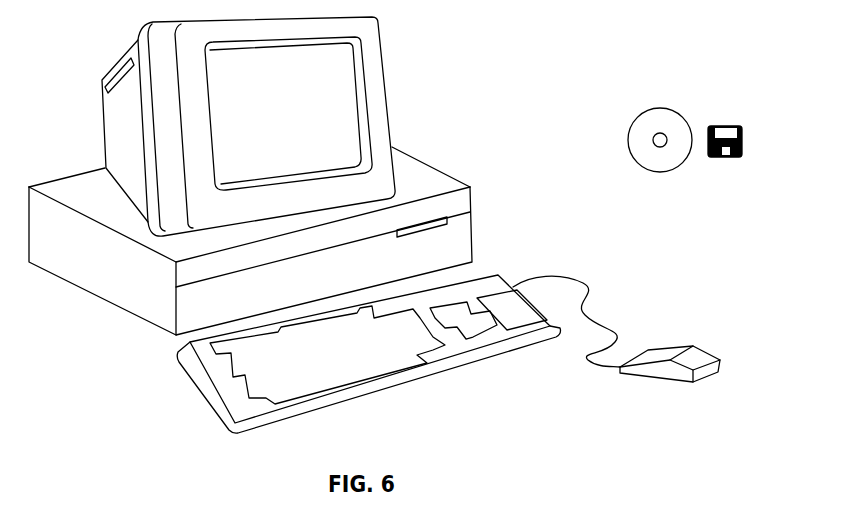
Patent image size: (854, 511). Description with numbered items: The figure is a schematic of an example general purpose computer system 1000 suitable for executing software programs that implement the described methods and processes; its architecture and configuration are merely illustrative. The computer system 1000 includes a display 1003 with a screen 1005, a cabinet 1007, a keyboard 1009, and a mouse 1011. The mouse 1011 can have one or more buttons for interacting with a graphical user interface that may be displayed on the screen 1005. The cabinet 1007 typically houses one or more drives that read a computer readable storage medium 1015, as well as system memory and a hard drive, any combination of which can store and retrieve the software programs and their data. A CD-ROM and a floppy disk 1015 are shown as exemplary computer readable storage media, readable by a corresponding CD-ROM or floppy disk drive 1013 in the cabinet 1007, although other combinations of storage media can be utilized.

The computer system 1000 is at (594, 45).
The display 1003 is at (390, 122).
The screen 1005 is at (357, 68).
The cabinet 1007 is at (143, 318).
The keyboard 1009 is at (377, 393).
The mouse 1011 is at (707, 352).
The CD-ROM or floppy disk drive 1013 is at (449, 217).
The computer readable storage medium 1015 is at (702, 93).